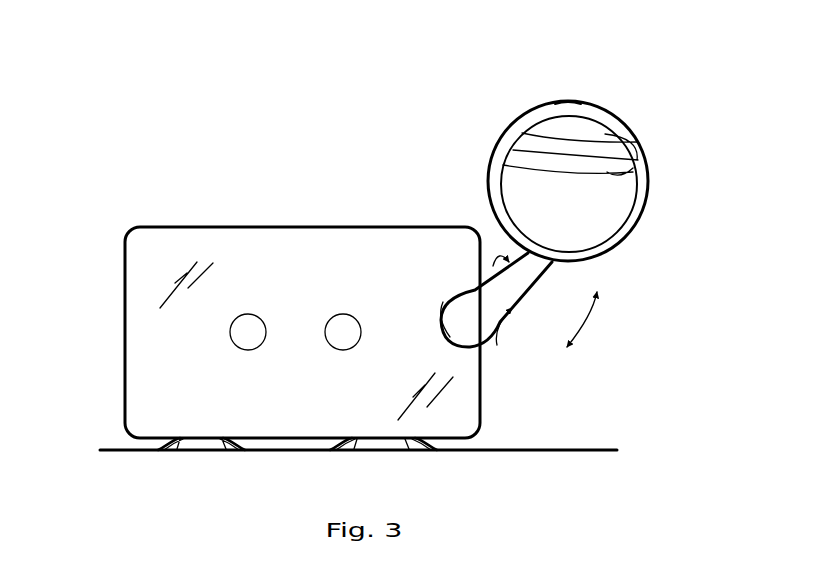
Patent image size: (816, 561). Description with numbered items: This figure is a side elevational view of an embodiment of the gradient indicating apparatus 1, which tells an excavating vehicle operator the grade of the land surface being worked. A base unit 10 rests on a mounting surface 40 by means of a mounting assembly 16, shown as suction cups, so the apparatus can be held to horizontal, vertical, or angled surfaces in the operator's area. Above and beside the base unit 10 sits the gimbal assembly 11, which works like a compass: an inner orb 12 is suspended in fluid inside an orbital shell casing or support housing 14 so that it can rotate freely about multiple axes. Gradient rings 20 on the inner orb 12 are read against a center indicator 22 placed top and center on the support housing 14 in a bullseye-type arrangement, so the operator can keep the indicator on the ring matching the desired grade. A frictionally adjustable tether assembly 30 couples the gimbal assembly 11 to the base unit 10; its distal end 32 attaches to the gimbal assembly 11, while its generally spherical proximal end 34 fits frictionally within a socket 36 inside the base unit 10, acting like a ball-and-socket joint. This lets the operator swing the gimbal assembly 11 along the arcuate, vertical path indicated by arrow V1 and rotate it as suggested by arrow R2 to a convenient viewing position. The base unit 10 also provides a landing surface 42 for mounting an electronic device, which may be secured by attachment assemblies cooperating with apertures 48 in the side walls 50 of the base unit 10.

The gradient indicating apparatus 1 is at (238, 113).
The base unit 10 is at (133, 200).
The gimbal assembly 11 is at (600, 165).
The inner orb 12 is at (632, 208).
The support housing 14 is at (620, 242).
The mounting assembly 16 is at (210, 448).
The gradient rings 20 is at (633, 160).
The center indicator 22 is at (569, 104).
The frictionally adjustable tether assembly 30 is at (505, 300).
The distal end 32 is at (552, 267).
The proximal end 34 is at (463, 302).
The socket 36 is at (438, 318).
The vertical surface 40 is at (547, 453).
The landing surface 42 is at (245, 226).
The apertures 48 is at (260, 346).
The side walls 50 is at (286, 281).
The rotation direction R2 is at (503, 345).
The arrow V1 is at (593, 317).